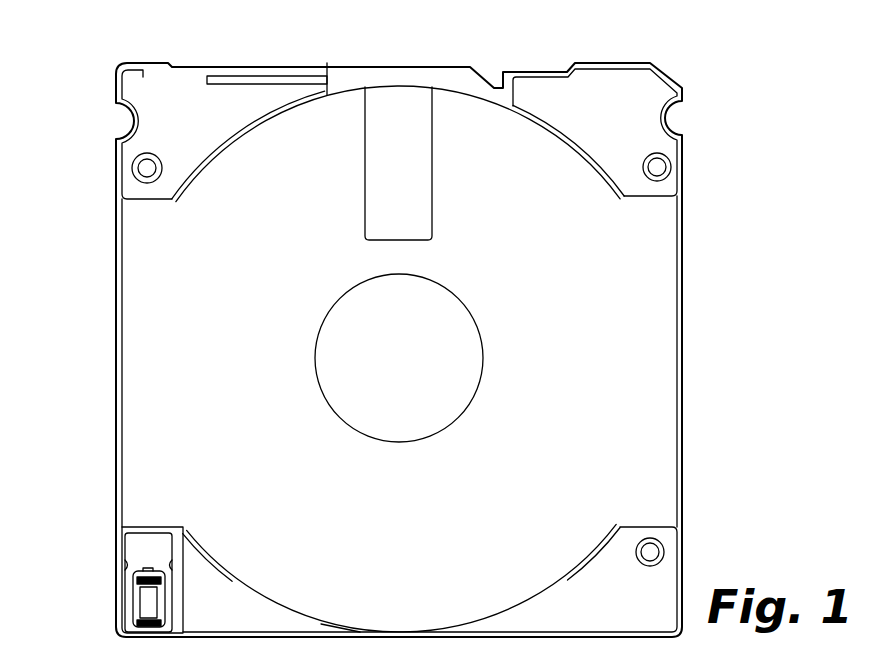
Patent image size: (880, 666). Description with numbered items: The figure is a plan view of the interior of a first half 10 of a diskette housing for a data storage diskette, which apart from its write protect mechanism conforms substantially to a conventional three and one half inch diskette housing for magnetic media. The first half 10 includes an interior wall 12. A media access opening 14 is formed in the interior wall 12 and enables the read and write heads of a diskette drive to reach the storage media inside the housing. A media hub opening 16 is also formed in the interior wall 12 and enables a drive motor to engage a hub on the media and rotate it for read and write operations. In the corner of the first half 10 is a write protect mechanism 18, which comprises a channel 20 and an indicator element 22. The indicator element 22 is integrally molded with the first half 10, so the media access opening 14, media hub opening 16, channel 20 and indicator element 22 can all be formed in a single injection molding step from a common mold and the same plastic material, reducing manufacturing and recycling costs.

The first half of diskette housing 10 is at (704, 106).
The interior wall 12 is at (140, 259).
The media access opening 14 is at (368, 123).
The media hub opening 16 is at (393, 440).
The write protect mechanism 18 is at (116, 572).
The channel 20 is at (140, 545).
The indicator element 22 is at (122, 597).